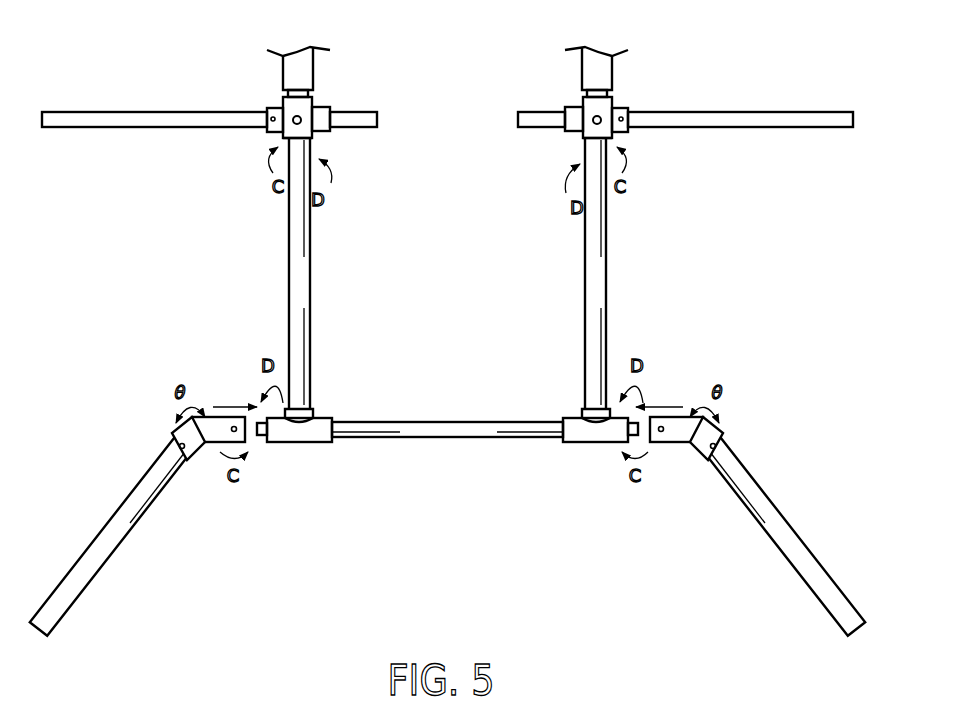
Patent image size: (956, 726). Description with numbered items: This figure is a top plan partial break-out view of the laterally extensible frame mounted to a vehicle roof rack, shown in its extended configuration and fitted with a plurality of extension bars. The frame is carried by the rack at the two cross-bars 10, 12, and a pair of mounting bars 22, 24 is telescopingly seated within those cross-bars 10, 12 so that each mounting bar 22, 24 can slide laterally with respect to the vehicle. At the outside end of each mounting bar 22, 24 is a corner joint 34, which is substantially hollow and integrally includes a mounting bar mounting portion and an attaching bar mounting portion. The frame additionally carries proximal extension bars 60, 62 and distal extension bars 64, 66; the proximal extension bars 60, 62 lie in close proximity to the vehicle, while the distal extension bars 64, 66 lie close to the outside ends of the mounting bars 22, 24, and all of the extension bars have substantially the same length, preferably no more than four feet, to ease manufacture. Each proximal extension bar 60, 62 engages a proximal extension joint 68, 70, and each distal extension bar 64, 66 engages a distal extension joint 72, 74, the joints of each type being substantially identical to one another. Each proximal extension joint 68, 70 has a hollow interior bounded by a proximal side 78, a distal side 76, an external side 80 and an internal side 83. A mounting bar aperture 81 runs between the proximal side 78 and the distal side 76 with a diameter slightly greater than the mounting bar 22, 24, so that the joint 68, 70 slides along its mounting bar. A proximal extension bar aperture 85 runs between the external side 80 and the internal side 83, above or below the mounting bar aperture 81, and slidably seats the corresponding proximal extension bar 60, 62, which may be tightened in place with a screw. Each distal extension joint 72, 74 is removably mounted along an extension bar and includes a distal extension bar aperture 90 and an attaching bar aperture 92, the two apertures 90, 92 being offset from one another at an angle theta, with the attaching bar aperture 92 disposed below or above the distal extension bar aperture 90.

The cross-bar 10 is at (313, 65).
The cross-bar 12 is at (582, 65).
The mounting bar 22 is at (289, 288).
The mounting bar 24 is at (607, 290).
The corner joint 34 is at (300, 446).
The proximal extension bar 60 is at (142, 98).
The proximal extension bar 62 is at (751, 98).
The distal extension bar 64 is at (777, 587).
The distal extension bar 66 is at (118, 590).
The proximal extension joint 68 is at (627, 140).
The proximal extension joint 70 is at (464, 137).
The distal extension joint 72 is at (447, 435).
The distal extension joint 74 is at (688, 448).
The distal side 76 is at (312, 140).
The proximal side 78 is at (288, 93).
The external side 80 is at (266, 133).
The mounting bar aperture 81 is at (304, 152).
The internal side 83 is at (313, 128).
The proximal extension bar aperture 85 is at (330, 110).
The distal extension bar aperture 90 is at (180, 445).
The attaching bar aperture 92 is at (238, 417).